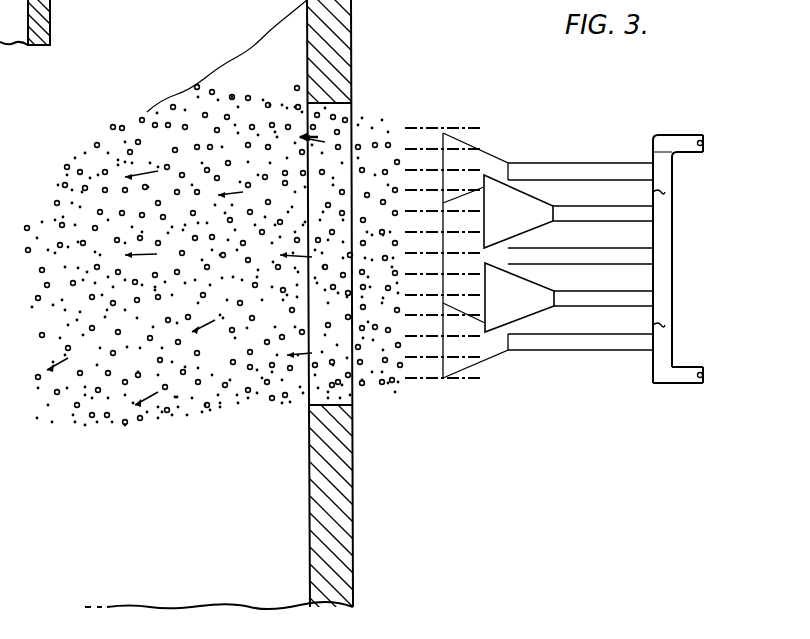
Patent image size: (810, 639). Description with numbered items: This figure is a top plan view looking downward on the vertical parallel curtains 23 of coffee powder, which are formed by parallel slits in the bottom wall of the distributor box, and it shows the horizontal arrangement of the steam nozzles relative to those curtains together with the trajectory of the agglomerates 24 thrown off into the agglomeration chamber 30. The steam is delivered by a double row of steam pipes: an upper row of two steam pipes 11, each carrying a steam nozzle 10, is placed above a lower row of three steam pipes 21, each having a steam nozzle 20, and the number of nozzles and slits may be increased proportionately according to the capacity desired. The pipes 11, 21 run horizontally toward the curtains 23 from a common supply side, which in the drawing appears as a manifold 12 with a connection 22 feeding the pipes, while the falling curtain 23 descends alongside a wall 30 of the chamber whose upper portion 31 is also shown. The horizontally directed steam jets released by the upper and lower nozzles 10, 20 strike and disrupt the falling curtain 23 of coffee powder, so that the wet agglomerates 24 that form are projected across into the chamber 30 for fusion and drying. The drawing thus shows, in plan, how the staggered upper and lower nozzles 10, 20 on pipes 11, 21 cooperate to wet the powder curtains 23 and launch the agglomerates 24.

The steam nozzle 10 is at (527, 202).
The upper row steam pipe 11 is at (613, 205).
The manifold 12 is at (672, 268).
The steam nozzle 20 is at (497, 160).
The lower row steam pipe 21 is at (614, 163).
The manifold connection 22 is at (663, 170).
The vertical parallel curtain 23 is at (463, 127).
The agglomerate 24 is at (381, 126).
The agglomeration chamber 30 is at (343, 510).
The wall member 31 is at (50, 10).